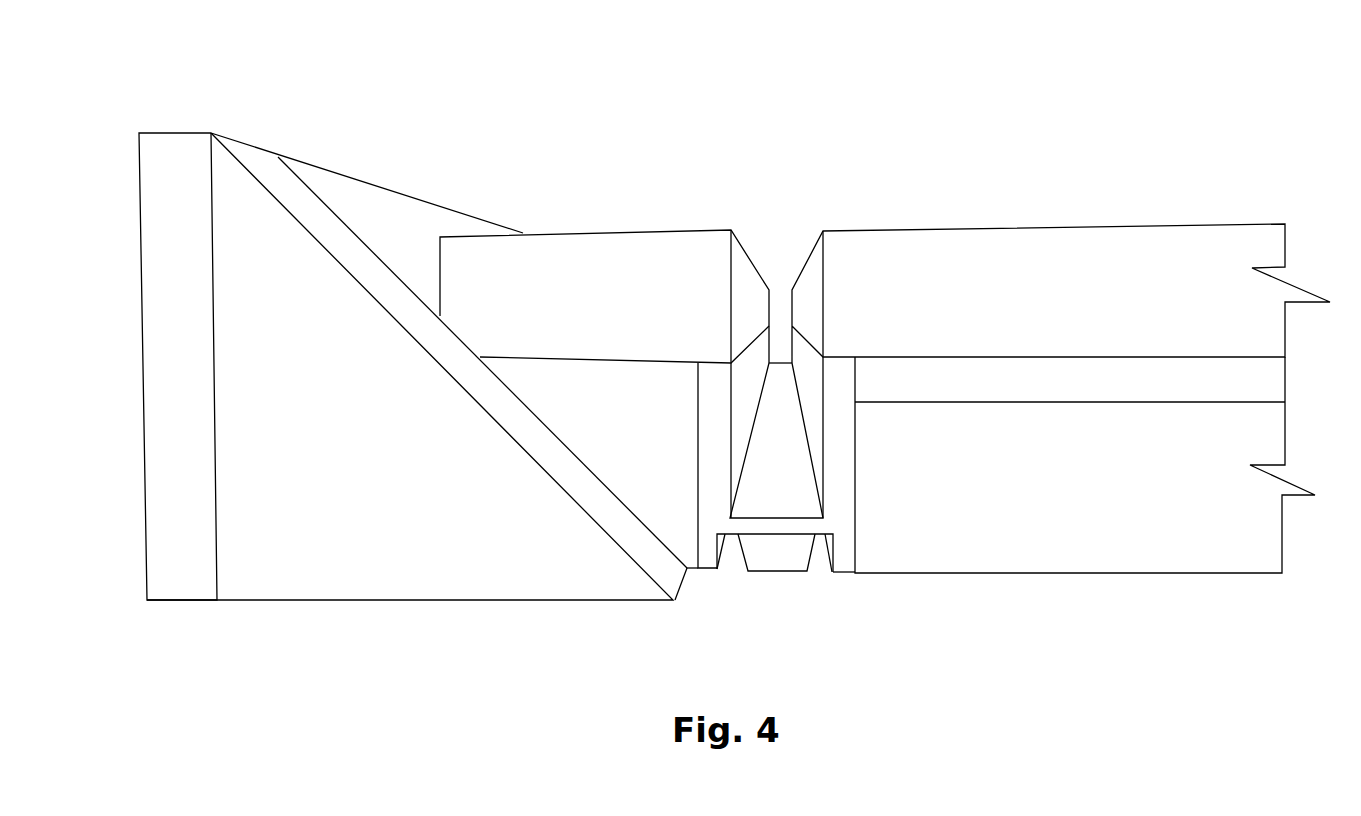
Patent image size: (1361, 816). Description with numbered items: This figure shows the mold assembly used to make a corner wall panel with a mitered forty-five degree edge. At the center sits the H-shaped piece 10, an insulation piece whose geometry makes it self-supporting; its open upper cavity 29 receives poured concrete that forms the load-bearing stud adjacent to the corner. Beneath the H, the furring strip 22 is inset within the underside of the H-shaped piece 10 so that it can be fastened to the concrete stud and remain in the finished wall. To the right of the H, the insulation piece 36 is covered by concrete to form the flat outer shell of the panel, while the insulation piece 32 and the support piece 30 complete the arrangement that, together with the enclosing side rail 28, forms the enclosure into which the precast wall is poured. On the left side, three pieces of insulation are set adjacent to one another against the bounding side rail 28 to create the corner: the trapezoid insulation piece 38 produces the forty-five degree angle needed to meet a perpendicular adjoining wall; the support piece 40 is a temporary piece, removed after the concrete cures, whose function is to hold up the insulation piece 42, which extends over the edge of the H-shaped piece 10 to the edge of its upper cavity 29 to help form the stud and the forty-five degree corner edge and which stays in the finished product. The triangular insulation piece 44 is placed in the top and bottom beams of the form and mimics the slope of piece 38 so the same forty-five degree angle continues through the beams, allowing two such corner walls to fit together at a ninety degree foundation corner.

The H-shaped piece 10 is at (856, 540).
The furring strip 22 is at (778, 572).
The side rail 28 is at (143, 222).
The upper cavity 29 is at (780, 245).
The support piece 30 is at (1093, 538).
The insulation piece 32 is at (1150, 387).
The insulation piece 36 is at (1045, 258).
The trapezoid insulation piece 38 is at (400, 193).
The support piece 40 is at (663, 497).
The insulation piece 42 is at (582, 290).
The triangular insulation piece 44 is at (397, 560).